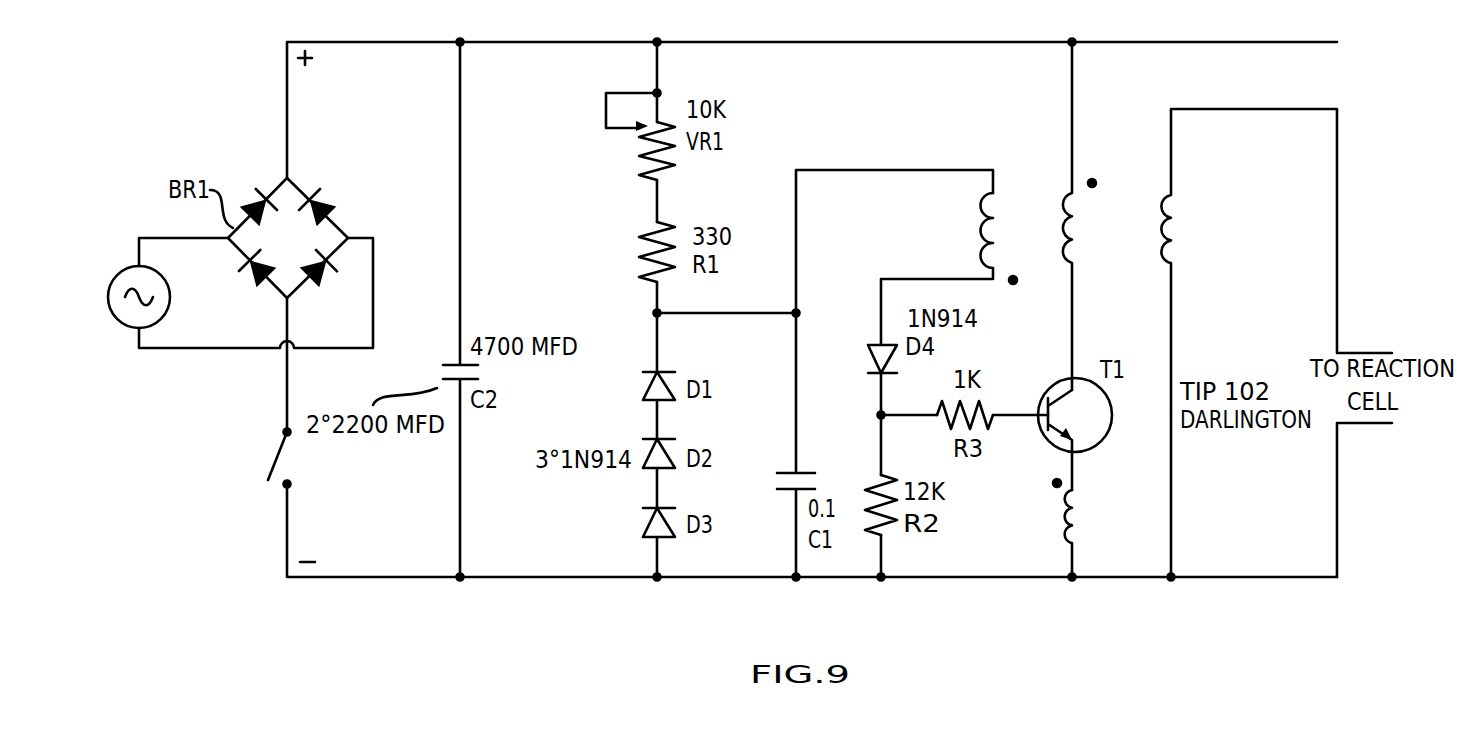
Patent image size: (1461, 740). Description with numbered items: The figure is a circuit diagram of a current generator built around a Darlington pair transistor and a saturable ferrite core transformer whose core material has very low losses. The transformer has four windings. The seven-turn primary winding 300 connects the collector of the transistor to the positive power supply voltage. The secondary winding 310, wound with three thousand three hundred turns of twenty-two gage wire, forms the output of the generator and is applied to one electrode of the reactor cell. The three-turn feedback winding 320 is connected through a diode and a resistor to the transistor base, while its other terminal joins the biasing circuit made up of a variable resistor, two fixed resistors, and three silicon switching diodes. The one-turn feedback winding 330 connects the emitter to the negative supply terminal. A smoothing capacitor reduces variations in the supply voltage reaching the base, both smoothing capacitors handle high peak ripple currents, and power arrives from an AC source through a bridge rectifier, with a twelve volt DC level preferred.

The primary winding 300 is at (1055, 178).
The secondary winding 310 is at (1192, 202).
The feedback winding 320 is at (963, 205).
The feedback winding 330 is at (1057, 517).